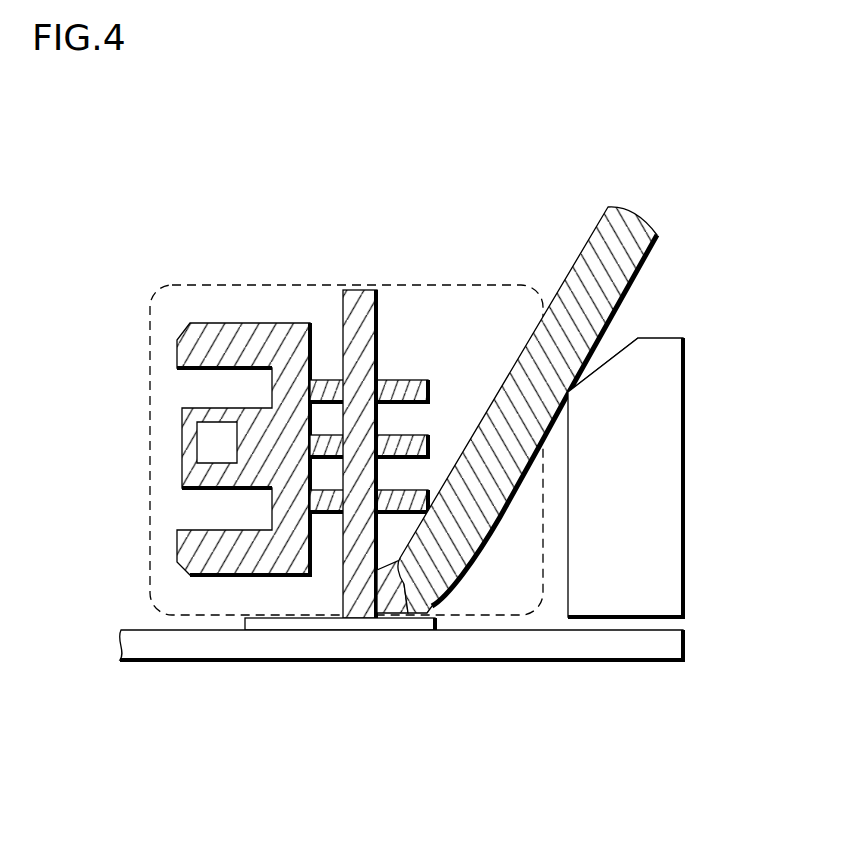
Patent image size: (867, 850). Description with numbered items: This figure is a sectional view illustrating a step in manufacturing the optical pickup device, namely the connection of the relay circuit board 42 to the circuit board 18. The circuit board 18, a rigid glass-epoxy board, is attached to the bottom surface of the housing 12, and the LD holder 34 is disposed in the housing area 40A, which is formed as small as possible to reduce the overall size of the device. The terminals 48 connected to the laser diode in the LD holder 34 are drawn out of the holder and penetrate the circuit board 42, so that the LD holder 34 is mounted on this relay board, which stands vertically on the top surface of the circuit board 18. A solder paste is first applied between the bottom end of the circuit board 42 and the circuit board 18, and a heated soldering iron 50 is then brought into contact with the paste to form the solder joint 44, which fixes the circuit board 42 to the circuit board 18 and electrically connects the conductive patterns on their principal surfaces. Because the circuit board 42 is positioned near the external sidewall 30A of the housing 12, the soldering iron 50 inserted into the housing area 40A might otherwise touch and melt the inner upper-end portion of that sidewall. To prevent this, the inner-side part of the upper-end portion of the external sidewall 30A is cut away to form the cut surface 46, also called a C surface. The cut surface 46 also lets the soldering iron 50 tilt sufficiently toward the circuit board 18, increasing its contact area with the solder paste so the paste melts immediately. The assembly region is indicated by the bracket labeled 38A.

The housing 12 is at (738, 478).
The circuit board 18 is at (668, 655).
The external sidewall 30A is at (625, 477).
The LD holder 34 is at (198, 324).
The mounting unit 38A is at (555, 670).
The housing area 40A is at (430, 283).
The circuit board 42 is at (356, 290).
The solder joint 44 is at (436, 608).
The cut surface 46 is at (608, 362).
The terminals 48 is at (414, 380).
The soldering iron 50 is at (658, 238).